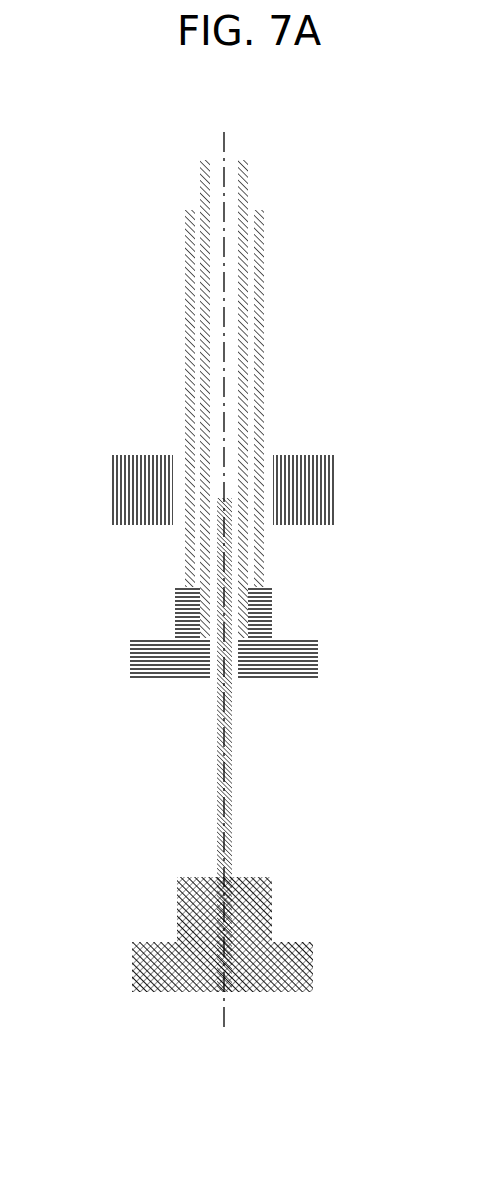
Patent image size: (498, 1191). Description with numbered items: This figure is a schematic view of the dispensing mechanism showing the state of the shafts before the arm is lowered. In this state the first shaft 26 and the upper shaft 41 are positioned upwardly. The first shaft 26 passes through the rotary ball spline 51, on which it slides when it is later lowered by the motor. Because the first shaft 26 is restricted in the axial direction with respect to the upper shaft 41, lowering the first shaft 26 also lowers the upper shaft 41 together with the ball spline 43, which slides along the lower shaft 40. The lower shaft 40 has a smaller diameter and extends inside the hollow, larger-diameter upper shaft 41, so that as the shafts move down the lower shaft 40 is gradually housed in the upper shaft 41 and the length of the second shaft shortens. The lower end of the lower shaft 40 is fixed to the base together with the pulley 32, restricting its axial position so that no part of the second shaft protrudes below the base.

The upper shaft 41 is at (252, 168).
The first shaft 26 is at (267, 250).
The rotary ball spline 51 is at (284, 453).
The ball spline 43 is at (120, 675).
The lower shaft 40 is at (234, 810).
The pulley 32 is at (128, 961).